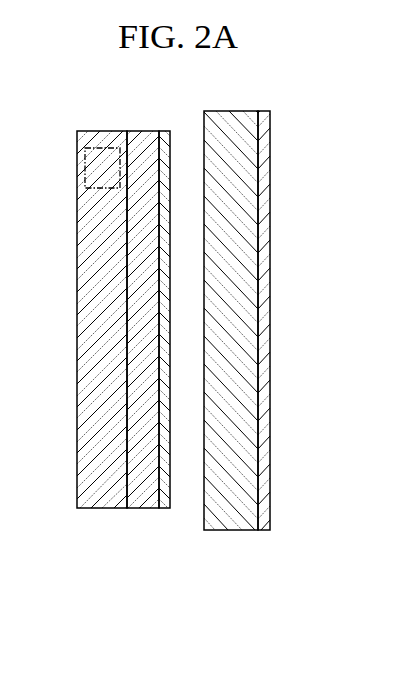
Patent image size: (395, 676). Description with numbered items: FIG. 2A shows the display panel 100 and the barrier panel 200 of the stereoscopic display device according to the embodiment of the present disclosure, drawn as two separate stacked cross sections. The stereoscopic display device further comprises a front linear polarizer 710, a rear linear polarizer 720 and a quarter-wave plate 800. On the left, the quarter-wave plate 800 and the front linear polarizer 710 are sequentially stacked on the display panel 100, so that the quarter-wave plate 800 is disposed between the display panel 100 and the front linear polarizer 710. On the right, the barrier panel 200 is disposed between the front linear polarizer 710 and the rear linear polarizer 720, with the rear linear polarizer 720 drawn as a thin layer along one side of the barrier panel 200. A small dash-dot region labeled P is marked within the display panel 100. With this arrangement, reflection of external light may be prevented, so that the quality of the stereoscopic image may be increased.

The display panel 100 is at (102, 495).
The quarter-wave plate 800 is at (142, 495).
The front linear polarizer 710 is at (165, 495).
The barrier panel 200 is at (233, 517).
The rear linear polarizer 720 is at (263, 532).
The pixel area P is at (103, 148).